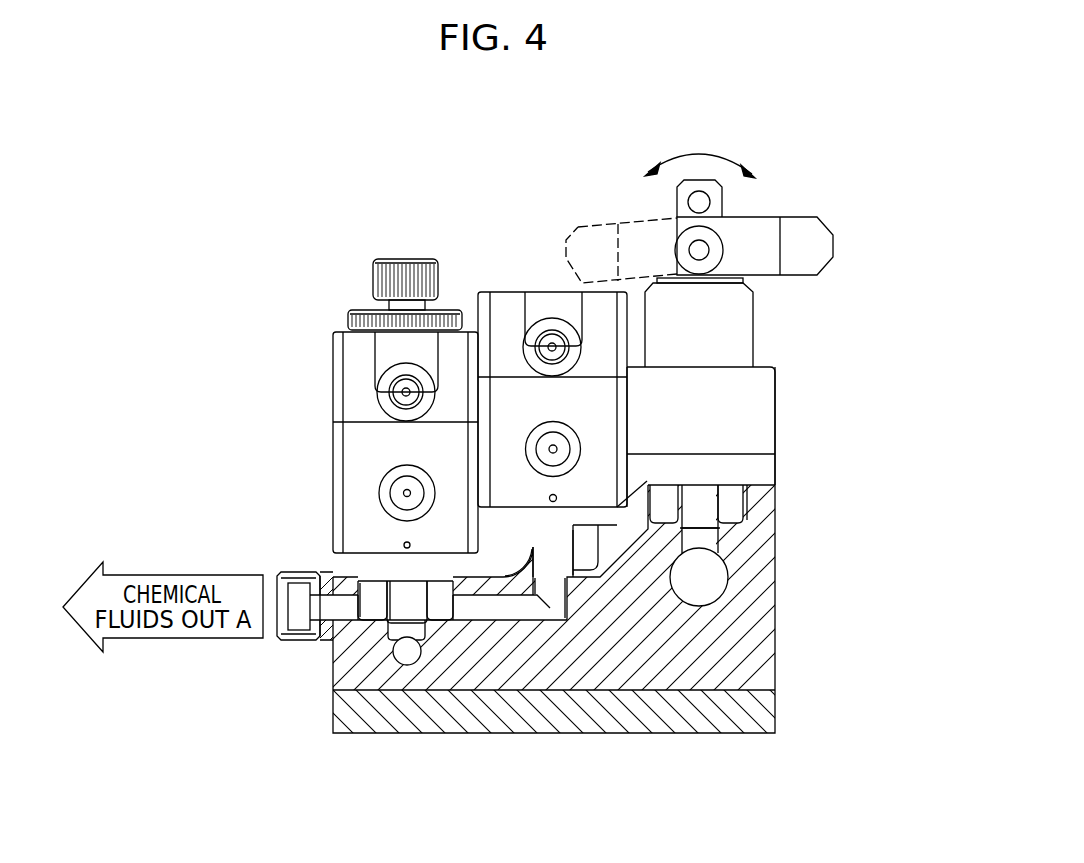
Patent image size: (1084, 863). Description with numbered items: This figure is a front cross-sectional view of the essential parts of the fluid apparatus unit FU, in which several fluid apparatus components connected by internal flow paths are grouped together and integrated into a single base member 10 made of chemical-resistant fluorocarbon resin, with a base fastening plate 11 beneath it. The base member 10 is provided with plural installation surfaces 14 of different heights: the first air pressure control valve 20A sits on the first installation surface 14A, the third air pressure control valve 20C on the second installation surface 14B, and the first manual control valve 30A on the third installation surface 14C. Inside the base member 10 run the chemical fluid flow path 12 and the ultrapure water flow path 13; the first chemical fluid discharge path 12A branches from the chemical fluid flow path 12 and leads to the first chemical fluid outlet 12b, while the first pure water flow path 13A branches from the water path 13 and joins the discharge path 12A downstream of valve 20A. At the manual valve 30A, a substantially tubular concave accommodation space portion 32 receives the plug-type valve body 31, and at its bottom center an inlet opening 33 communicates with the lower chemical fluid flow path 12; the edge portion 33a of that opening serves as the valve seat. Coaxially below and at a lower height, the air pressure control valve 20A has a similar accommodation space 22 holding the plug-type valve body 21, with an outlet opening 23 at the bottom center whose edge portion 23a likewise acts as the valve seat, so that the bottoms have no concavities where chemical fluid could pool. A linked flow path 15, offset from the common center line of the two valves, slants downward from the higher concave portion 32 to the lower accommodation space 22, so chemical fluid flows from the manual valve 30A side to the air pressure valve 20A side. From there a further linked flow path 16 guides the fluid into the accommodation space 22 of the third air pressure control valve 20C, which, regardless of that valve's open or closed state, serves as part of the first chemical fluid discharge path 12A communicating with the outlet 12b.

The base member 10 is at (780, 651).
The base fastening plate 11 is at (725, 725).
The chemical fluid flow path 12 is at (715, 577).
The first chemical fluid discharge path 12A is at (540, 624).
The first chemical fluid outlet 12b is at (277, 625).
The ultrapure water flow path 13 is at (405, 653).
The first pure water flow path 13A is at (420, 630).
The installation surfaces 14 is at (595, 507).
The first installation surface 14A is at (640, 510).
The second installation surface 14B is at (370, 593).
The third installation surface 14C is at (755, 450).
The linked flow path 15 is at (637, 448).
The linked flow path 16 is at (503, 612).
The first air pressure control valve 20A is at (500, 290).
The third air pressure control valve 20C is at (333, 372).
The valve body 21 is at (412, 590).
The accommodation space 22 is at (362, 585).
The outlet opening 23 is at (340, 673).
The edge portion 23a is at (395, 590).
The first manual control valve 30A is at (737, 313).
The valve body 31 is at (710, 505).
The accommodation space portion 32 is at (738, 492).
The inlet opening 33 is at (710, 538).
The edge portion 33a is at (682, 530).
The fluid apparatus unit FU is at (820, 167).